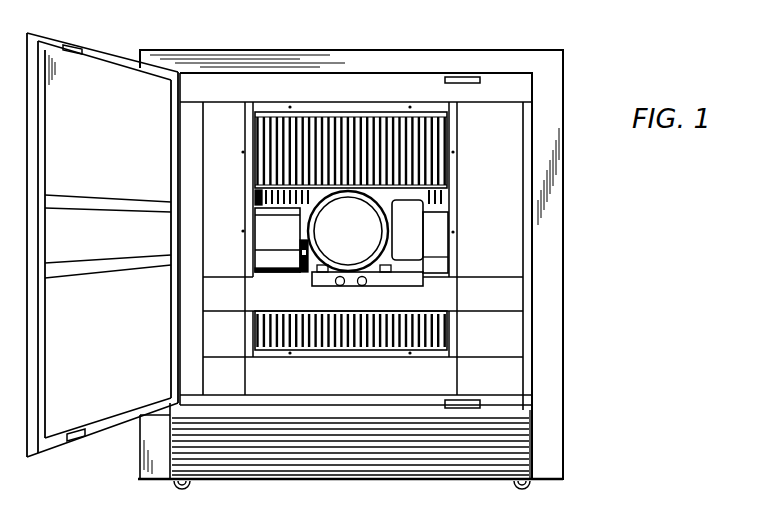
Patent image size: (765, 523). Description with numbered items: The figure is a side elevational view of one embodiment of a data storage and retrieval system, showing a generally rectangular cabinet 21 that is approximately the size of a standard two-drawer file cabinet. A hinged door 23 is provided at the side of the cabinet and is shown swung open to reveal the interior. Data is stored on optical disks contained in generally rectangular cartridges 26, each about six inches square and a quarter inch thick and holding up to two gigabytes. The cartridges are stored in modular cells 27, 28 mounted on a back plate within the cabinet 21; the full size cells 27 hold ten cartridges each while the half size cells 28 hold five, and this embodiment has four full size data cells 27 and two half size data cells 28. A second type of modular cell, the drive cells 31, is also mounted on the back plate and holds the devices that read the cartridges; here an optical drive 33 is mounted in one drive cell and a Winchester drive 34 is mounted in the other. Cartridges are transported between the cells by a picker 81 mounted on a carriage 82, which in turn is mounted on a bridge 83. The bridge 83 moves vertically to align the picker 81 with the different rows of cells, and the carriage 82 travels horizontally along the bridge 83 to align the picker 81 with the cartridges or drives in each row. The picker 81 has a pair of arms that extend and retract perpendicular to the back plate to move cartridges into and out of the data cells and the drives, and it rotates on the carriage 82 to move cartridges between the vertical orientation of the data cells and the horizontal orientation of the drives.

The cabinet 21 is at (353, 62).
The hinged door 23 is at (116, 60).
The cartridge 26 is at (268, 110).
The modular cell 27 is at (445, 143).
The modular cell 28 is at (357, 120).
The drive cell 31 is at (354, 240).
The optical drive 33 is at (262, 242).
The Winchester drive 34 is at (437, 245).
The picker 81 is at (386, 233).
The carriage 82 is at (422, 283).
The bridge 83 is at (515, 299).